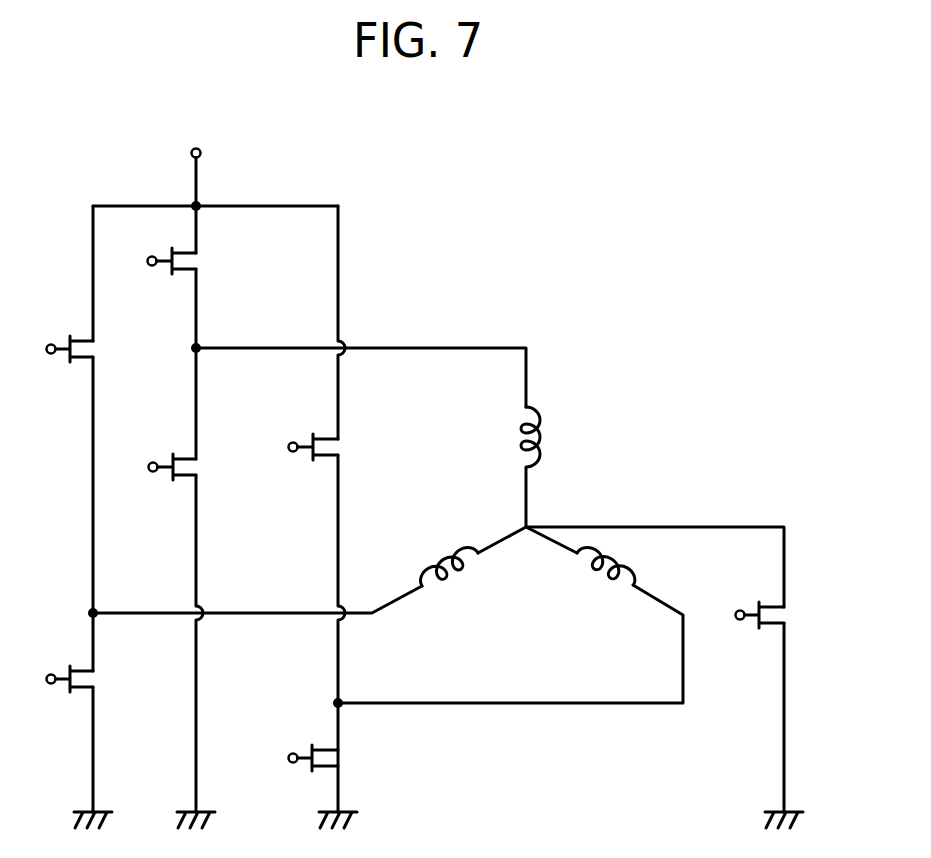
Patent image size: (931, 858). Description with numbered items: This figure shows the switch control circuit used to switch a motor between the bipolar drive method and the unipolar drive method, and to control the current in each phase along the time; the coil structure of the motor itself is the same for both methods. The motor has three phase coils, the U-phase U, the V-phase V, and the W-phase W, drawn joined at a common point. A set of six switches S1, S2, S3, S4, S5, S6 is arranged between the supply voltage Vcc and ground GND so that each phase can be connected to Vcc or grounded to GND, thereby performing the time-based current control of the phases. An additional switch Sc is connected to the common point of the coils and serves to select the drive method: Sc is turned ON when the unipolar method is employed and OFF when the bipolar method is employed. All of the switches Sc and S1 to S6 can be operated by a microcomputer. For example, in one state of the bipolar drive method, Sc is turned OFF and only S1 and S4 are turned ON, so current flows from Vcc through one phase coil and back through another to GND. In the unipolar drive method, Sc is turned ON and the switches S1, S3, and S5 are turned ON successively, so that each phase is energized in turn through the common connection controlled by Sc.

The switch S1 is at (166, 278).
The switch S2 is at (167, 485).
The switch S3 is at (308, 465).
The switch S4 is at (308, 743).
The switch S5 is at (64, 367).
The switch S6 is at (64, 663).
The switch for switching between the B method and the U method Sc is at (755, 632).
The U-phase U is at (545, 437).
The V-phase V is at (606, 561).
The W-phase W is at (449, 578).
The supply voltage Vcc is at (194, 161).
The ground GND is at (376, 820).